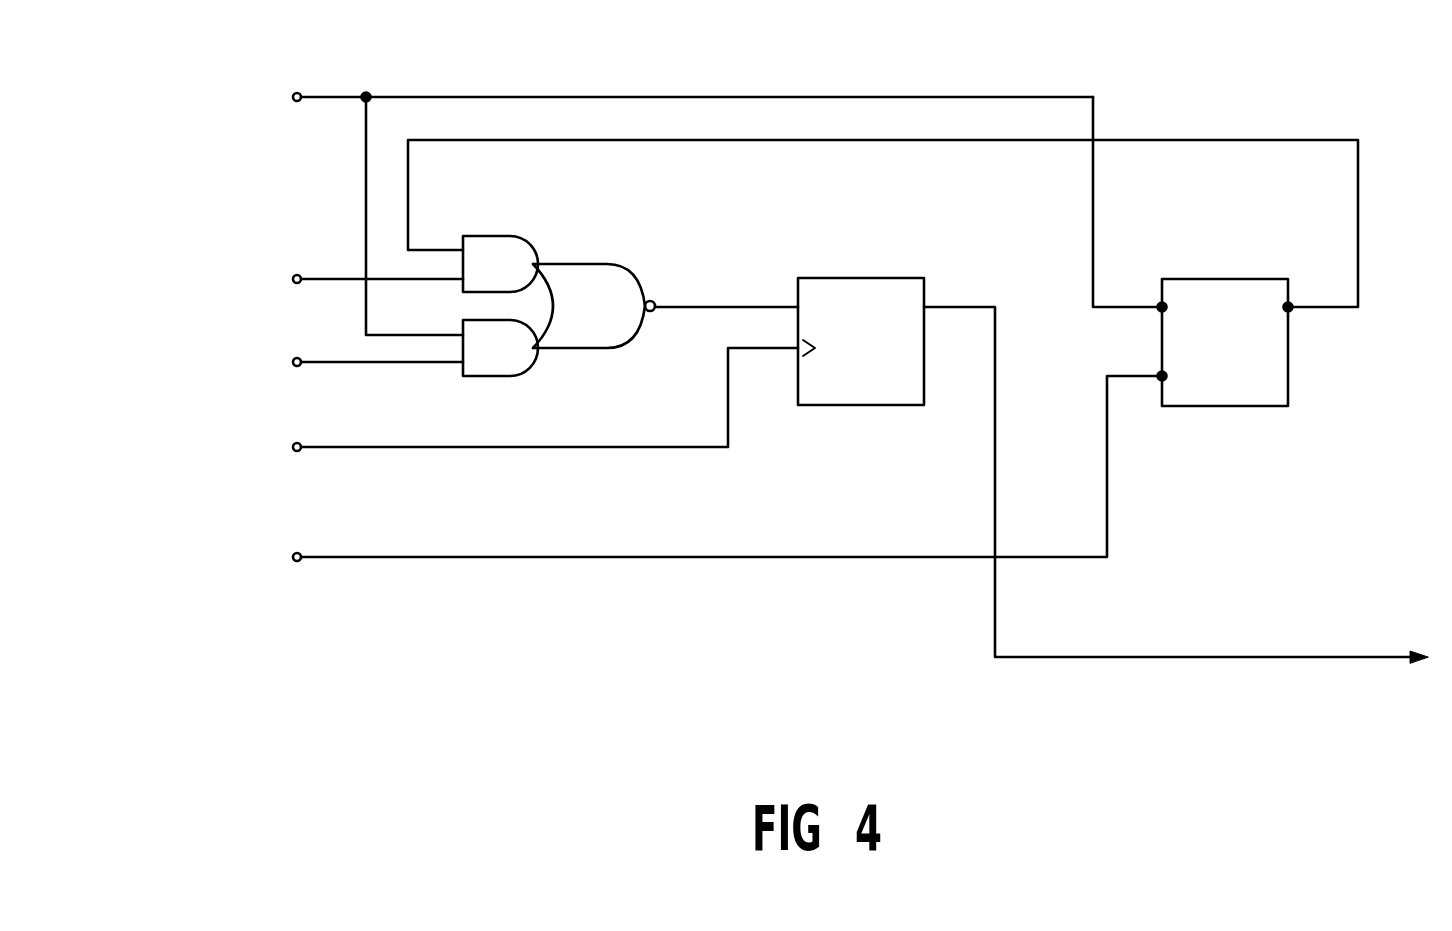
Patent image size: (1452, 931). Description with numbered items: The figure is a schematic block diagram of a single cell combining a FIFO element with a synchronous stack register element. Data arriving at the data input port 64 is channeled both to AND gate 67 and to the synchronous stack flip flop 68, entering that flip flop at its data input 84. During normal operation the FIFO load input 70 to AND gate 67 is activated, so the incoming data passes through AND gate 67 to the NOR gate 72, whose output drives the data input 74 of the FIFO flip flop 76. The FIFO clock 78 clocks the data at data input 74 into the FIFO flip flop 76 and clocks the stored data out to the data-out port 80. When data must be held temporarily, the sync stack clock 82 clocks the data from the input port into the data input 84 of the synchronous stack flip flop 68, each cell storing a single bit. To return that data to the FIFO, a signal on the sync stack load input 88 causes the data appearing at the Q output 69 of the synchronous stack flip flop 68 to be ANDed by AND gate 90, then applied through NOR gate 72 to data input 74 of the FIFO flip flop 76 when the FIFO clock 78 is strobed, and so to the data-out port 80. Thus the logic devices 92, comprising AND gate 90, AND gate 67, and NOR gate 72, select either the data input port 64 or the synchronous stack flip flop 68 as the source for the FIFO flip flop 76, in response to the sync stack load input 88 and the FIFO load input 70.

The data input port 64 is at (330, 97).
The data input of synchronous stack flip flop 84 is at (1093, 222).
The sync stack load input 88 is at (320, 279).
The FIFO load input 70 is at (345, 362).
The FIFO clock 78 is at (345, 447).
The sync stack clock 82 is at (345, 557).
The logic devices 92 is at (617, 200).
The AND gate 90 is at (524, 240).
The AND gate 67 is at (489, 380).
The NOR gate 72 is at (641, 284).
The data input of FIFO flip flop 74 is at (727, 307).
The FIFO flip flop 76 is at (880, 278).
The synchronous stack flip flop 68 is at (1268, 408).
The Q output 69 is at (1358, 213).
The data-out port 80 is at (1355, 657).